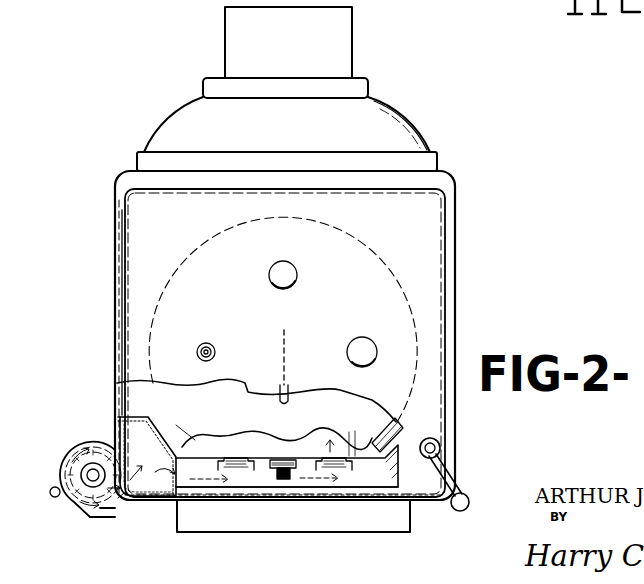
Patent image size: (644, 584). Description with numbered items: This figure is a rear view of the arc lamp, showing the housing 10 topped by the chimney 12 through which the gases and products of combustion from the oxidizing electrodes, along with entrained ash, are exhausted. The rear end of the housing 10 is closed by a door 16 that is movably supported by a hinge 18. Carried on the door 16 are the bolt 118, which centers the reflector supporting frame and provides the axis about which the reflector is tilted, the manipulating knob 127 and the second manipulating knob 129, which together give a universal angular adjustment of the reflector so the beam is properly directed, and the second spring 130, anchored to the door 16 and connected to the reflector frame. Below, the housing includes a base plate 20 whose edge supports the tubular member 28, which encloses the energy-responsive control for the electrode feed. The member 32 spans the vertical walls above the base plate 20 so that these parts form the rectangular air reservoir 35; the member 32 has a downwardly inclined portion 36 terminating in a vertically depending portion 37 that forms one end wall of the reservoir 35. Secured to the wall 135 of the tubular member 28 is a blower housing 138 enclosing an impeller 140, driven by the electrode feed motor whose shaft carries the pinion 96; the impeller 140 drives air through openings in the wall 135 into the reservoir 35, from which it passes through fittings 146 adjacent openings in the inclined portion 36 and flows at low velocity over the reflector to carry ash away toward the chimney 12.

The housing 10 is at (437, 163).
The chimney 12 is at (345, 58).
The door 16 is at (437, 206).
The hinge 18 is at (122, 234).
The base plate 20 is at (328, 501).
The tubular member 28 is at (140, 450).
The member 32 is at (260, 458).
The air reservoir 35 is at (245, 507).
The downwardly inclined portion 36 is at (360, 457).
The vertically depending portion 37 is at (368, 489).
The pinion 96 is at (305, 450).
The bolt 118 is at (290, 340).
The manipulating knob 127 is at (293, 268).
The second manipulating knob 129 is at (371, 333).
The second spring 130 is at (204, 343).
The wall 135 is at (117, 406).
The blower housing 138 is at (73, 512).
The blower fan or impeller 140 is at (78, 444).
The fitting 146 is at (246, 458).